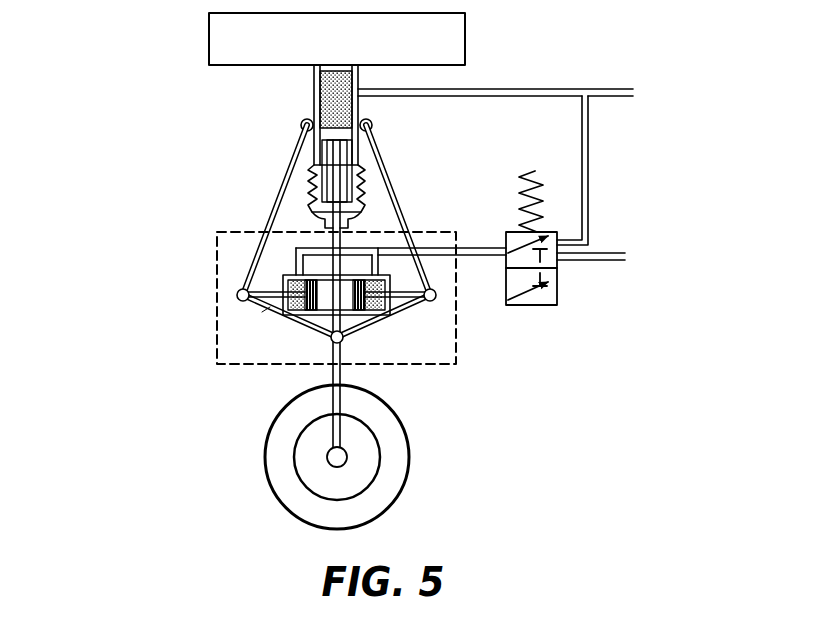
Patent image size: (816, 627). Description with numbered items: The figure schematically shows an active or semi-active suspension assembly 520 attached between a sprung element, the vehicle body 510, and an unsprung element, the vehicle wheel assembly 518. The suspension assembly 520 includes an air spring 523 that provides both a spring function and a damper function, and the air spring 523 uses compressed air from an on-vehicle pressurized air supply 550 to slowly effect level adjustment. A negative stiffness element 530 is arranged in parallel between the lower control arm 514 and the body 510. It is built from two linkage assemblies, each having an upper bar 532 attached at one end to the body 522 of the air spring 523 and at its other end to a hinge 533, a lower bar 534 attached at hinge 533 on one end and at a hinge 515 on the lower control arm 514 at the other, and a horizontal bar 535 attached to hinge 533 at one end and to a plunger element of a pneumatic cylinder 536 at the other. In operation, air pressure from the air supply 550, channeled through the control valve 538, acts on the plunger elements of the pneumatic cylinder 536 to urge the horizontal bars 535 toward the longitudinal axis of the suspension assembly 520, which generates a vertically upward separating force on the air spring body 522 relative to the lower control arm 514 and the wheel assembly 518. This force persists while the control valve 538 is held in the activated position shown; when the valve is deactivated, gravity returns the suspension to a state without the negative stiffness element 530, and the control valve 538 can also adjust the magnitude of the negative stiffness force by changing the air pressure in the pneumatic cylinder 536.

The vehicle body 510 is at (317, 51).
The lower control arm 514 is at (342, 372).
The hinge 515 is at (330, 345).
The vehicle wheel assembly 518 is at (409, 458).
The active suspension assembly 520 is at (186, 141).
The body of the air spring 522 is at (301, 128).
The air spring 523 is at (314, 93).
The negative stiffness element 530 is at (456, 318).
The upper bar 532 is at (270, 226).
The hinge 533 is at (237, 297).
The lower bar 534 is at (262, 312).
The horizontal bar 535 is at (273, 287).
The pneumatic cylinder 536 is at (356, 316).
The control valve 538 is at (562, 291).
The pressurized air supply 550 is at (521, 162).